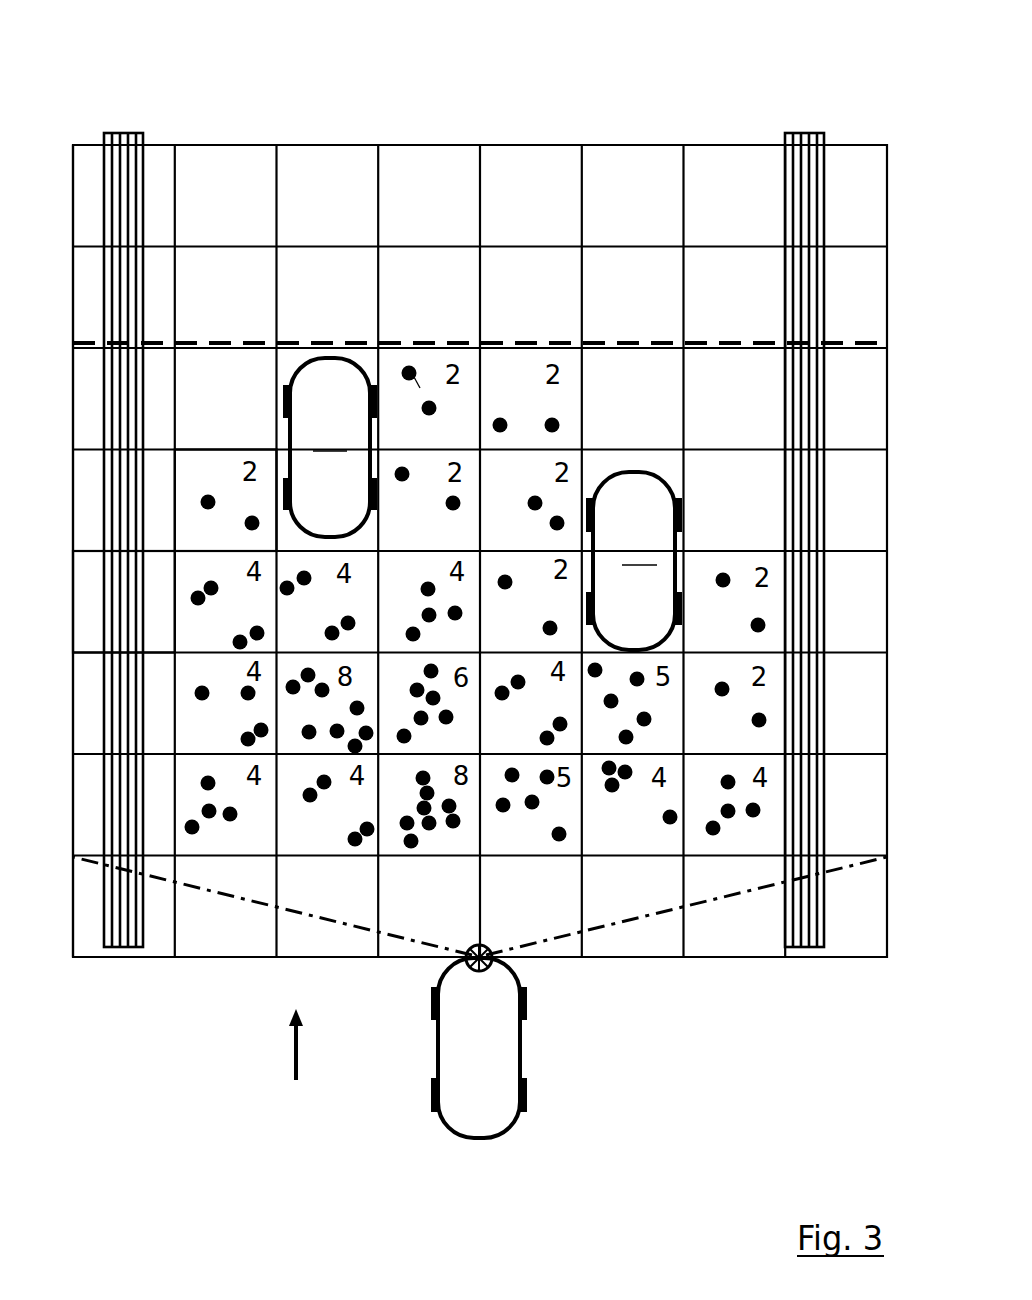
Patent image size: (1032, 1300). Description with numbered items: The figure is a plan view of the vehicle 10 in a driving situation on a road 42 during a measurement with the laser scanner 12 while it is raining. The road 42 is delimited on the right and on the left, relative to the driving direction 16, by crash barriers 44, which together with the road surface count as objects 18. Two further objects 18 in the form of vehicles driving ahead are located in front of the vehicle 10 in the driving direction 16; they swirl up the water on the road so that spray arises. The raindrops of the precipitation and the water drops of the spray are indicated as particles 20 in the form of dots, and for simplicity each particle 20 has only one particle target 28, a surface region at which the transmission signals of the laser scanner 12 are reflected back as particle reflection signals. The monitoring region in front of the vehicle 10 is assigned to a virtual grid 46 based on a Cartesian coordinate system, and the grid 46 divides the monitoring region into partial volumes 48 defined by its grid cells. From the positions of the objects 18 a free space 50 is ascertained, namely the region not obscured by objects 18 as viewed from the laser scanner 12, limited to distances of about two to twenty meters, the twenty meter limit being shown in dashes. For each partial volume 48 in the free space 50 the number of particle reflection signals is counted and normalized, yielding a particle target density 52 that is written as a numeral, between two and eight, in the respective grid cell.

The vehicle 10 is at (463, 1045).
The laser scanner 12 is at (497, 958).
The driving direction 16 is at (294, 1048).
The object 18 is at (482, 504).
The particle 20 is at (410, 362).
The particle target 28 is at (414, 377).
The road 42 is at (90, 136).
The crash barrier 44 is at (123, 430).
The virtual grid 46 is at (625, 140).
The partial volume 48 is at (205, 465).
The free space 50 is at (158, 639).
The particle target density 52 is at (452, 362).